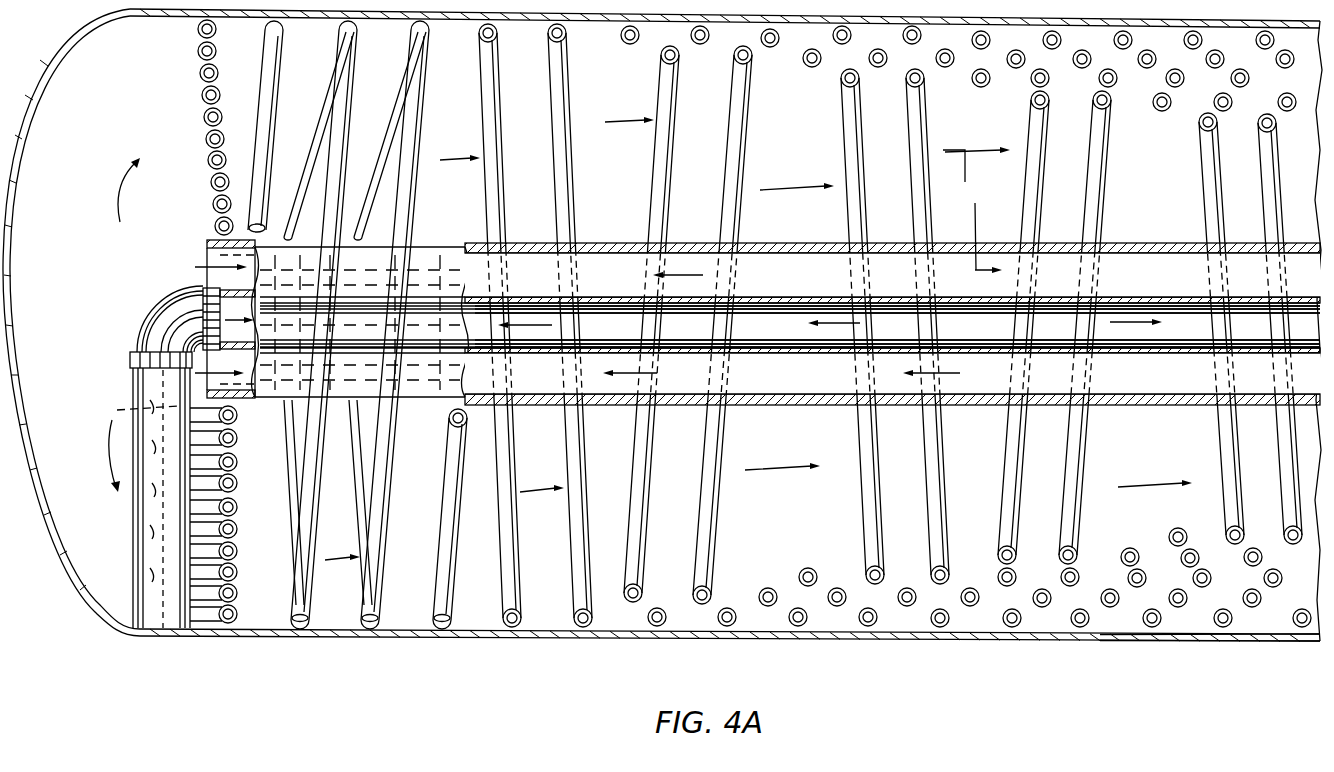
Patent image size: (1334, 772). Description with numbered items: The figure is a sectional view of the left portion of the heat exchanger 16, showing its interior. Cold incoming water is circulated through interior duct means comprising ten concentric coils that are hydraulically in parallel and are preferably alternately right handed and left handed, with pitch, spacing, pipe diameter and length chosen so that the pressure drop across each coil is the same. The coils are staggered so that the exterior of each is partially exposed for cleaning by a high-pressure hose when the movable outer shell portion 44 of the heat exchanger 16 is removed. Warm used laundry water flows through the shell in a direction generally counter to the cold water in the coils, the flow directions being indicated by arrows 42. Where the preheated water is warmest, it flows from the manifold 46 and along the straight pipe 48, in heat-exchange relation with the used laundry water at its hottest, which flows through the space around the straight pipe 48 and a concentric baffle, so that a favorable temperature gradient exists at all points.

The heat exchanger 16 is at (1056, 650).
The arrows 42 is at (758, 472).
The movable outer shell portion 44 is at (1194, 642).
The manifold 46 is at (131, 506).
The straight pipe 48 is at (809, 292).